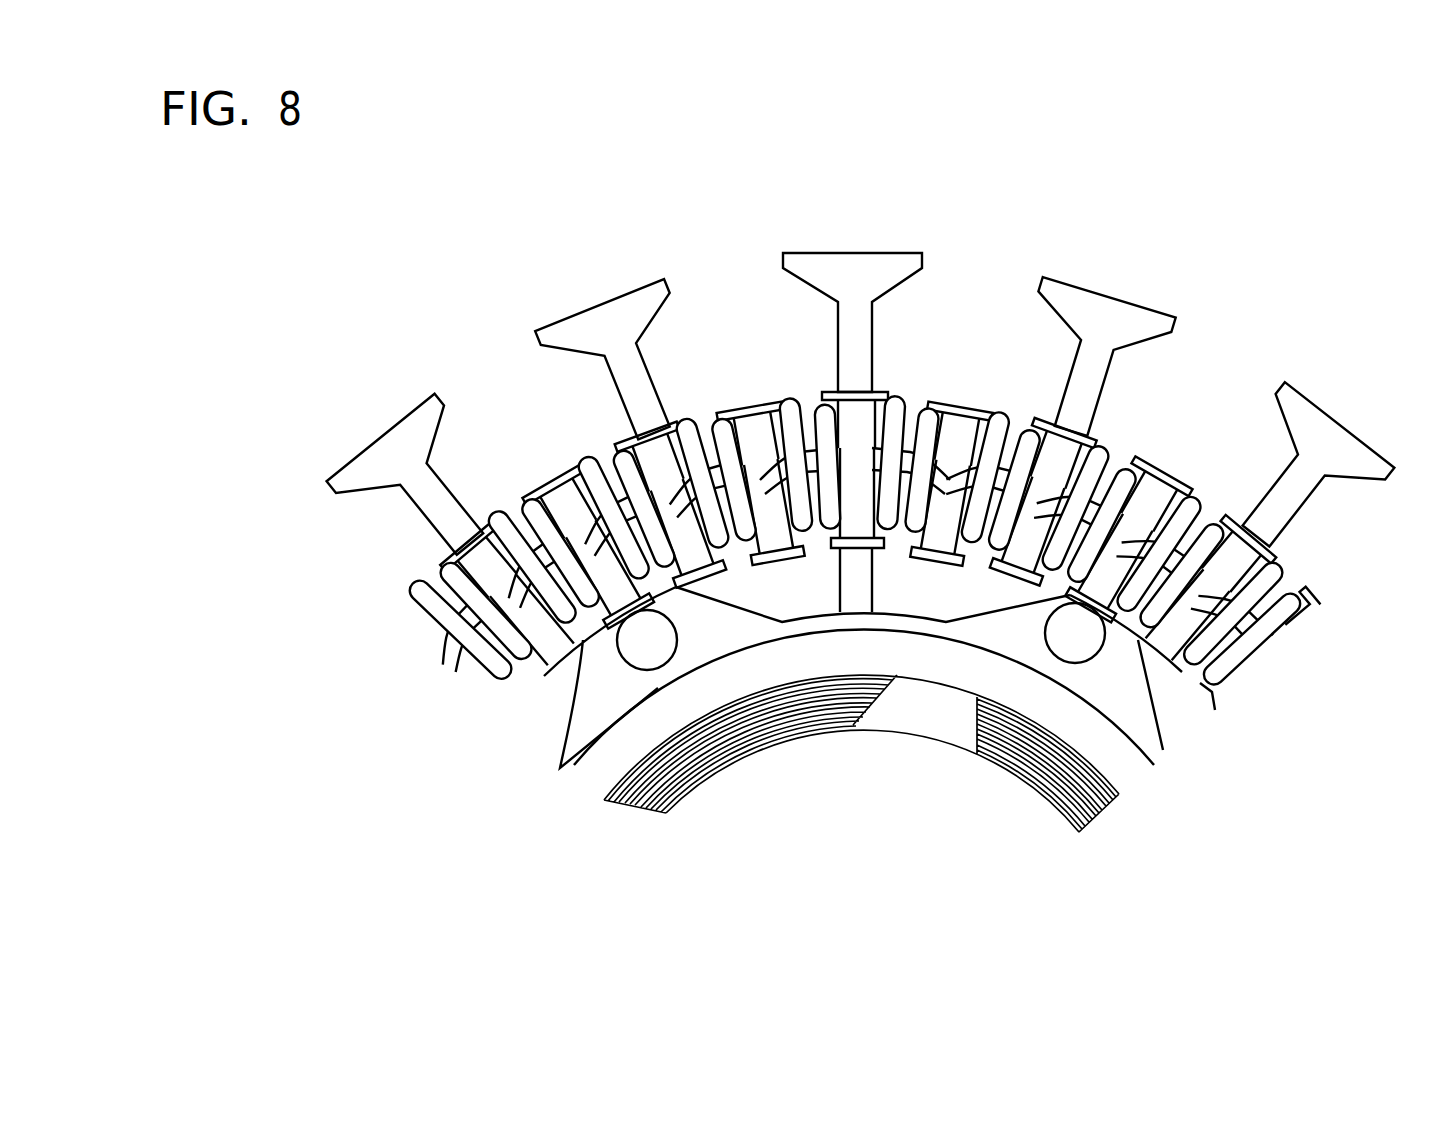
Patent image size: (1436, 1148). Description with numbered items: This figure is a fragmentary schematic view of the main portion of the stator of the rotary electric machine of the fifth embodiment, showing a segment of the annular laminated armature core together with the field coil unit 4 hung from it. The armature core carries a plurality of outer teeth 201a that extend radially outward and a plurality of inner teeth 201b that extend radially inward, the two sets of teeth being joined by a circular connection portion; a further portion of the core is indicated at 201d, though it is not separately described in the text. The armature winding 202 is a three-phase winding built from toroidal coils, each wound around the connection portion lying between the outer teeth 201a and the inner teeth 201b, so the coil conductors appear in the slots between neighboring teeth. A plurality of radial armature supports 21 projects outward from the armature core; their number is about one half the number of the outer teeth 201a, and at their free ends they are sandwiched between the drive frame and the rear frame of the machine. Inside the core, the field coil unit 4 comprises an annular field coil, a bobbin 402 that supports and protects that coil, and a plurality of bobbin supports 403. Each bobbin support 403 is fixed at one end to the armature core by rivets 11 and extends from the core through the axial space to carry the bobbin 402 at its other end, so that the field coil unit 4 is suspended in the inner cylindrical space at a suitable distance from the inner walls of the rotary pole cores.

The armature support 21 is at (410, 433).
The outer teeth 201a is at (483, 551).
The inner teeth 201b is at (563, 643).
The stator core piece outer flange 201d is at (447, 513).
The armature winding 202 is at (513, 650).
The field coil unit 4 is at (800, 713).
The rivets 11 is at (650, 647).
The bobbin 402 is at (647, 733).
The bobbin supports 403 is at (613, 693).